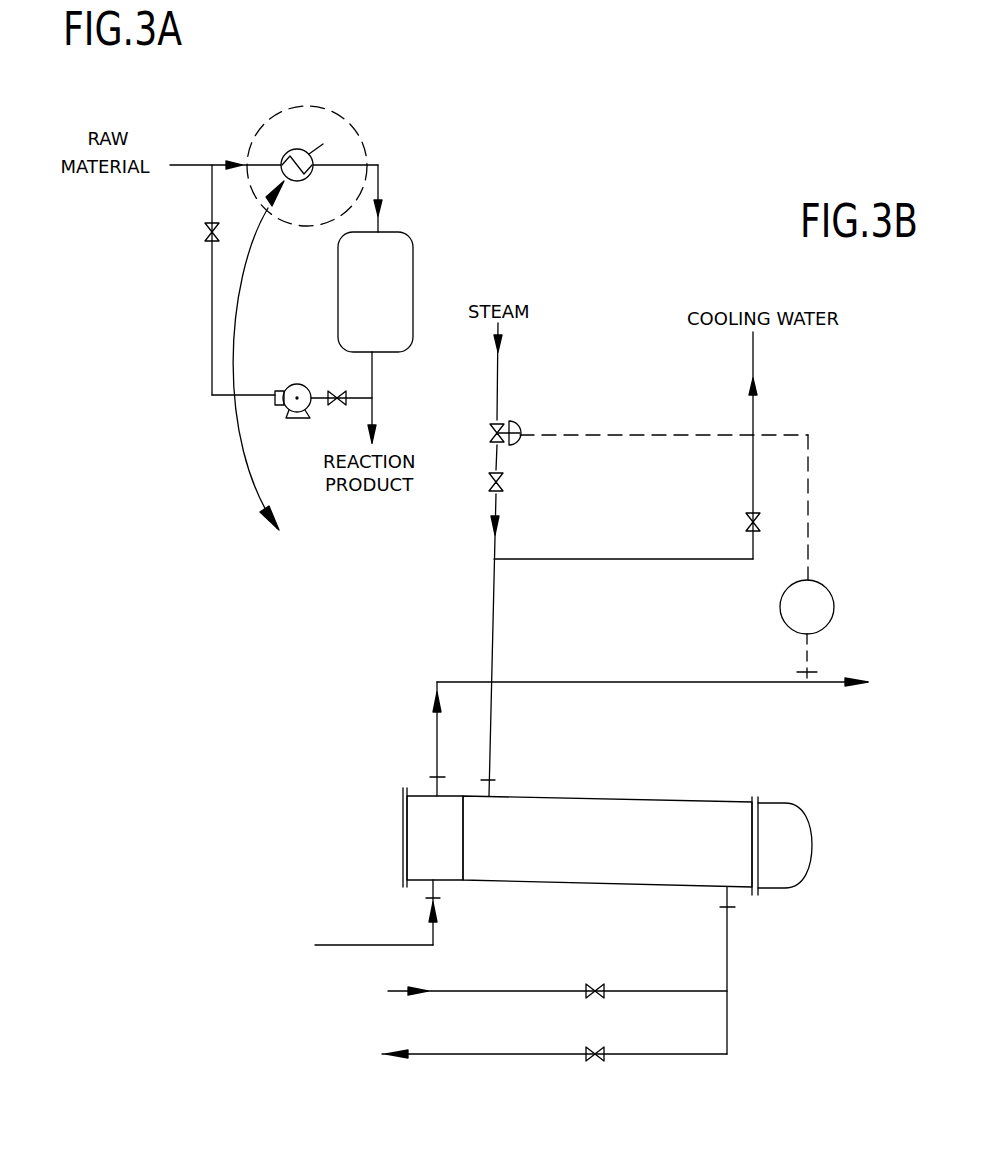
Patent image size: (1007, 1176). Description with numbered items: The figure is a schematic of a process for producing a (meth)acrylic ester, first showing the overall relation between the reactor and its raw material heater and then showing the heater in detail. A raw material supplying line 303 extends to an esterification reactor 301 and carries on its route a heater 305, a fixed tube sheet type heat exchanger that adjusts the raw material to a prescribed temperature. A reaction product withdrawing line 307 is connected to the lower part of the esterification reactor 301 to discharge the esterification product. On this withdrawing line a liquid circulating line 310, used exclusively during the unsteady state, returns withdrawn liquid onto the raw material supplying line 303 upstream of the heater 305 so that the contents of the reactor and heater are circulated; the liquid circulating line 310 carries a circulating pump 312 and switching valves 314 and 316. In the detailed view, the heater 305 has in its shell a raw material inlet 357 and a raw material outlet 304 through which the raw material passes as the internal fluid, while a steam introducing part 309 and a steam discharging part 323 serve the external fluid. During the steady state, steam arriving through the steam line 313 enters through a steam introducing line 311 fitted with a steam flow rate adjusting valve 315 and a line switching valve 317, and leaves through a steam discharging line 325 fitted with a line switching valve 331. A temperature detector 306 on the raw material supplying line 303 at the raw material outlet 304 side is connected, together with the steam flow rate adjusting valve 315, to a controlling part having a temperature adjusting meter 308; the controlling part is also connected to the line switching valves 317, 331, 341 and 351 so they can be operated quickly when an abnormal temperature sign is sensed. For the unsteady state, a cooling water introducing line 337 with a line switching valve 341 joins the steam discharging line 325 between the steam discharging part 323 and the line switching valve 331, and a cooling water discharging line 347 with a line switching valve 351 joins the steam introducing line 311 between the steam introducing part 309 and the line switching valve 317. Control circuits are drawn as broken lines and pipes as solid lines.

In FIG. 3A, the esterification reactor 301 is at (414, 282).
In FIG. 3A, the raw material supplying line 303 is at (262, 164).
In FIG. 3B, the raw material supplying line 303 is at (654, 682).
In FIG. 3B, the raw material outlet 304 is at (430, 777).
In FIG. 3A, the heater 305 is at (308, 176).
In FIG. 3B, the heater 305 is at (637, 810).
In FIG. 3B, the temperature detector 306 is at (812, 671).
In FIG. 3A, the reaction product withdrawing line 307 is at (376, 380).
In FIG. 3B, the temperature adjusting meter 308 is at (816, 602).
In FIG. 3B, the steam introducing part 309 is at (495, 780).
In FIG. 3A, the liquid circulating line 310 is at (251, 393).
In FIG. 3B, the steam introducing line 311 is at (492, 620).
In FIG. 3A, the circulating pump 312 is at (297, 390).
In FIG. 3B, the steam supply line 313 is at (500, 370).
In FIG. 3A, the switching valve 314 is at (337, 406).
In FIG. 3B, the steam flow rate adjusting valve 315 is at (508, 428).
In FIG. 3A, the switching valve 316 is at (206, 232).
In FIG. 3B, the line switching valve 317 is at (503, 484).
In FIG. 3B, the steam discharging part 323 is at (722, 907).
In FIG. 3B, the steam discharging line 325 is at (677, 1054).
In FIG. 3B, the line switching valve 331 is at (596, 1050).
In FIG. 3B, the cooling water introducing line 337 is at (666, 991).
In FIG. 3B, the line switching valve 341 is at (596, 988).
In FIG. 3B, the cooling water discharging line 347 is at (609, 559).
In FIG. 3B, the line switching valve 351 is at (745, 522).
In FIG. 3B, the raw material inlet 357 is at (426, 900).